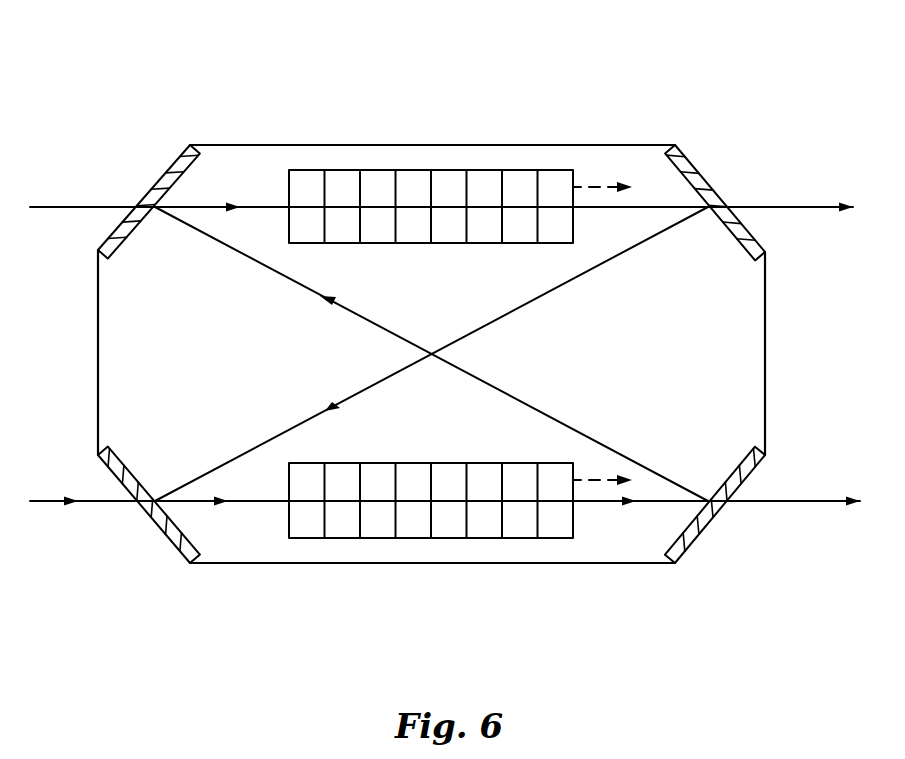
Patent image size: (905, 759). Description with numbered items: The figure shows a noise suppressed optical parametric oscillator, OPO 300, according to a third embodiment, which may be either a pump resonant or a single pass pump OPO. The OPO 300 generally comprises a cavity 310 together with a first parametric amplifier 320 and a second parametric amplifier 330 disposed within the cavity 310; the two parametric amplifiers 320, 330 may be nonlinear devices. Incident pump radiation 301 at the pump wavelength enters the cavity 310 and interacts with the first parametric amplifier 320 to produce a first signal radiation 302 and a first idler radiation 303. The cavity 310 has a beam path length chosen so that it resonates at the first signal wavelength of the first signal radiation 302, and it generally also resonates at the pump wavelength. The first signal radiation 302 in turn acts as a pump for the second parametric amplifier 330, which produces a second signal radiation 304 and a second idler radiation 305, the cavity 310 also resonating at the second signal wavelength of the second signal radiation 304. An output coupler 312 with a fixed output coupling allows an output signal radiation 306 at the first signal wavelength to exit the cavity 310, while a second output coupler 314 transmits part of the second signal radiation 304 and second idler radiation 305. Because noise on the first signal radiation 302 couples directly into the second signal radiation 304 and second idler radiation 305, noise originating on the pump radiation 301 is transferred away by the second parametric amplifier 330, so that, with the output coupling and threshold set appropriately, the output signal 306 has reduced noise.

The noise suppressed OPO 300 is at (270, 82).
The pump radiation 301 is at (60, 505).
The first signal radiation 302 is at (600, 530).
The first idler radiation 303 is at (598, 478).
The second signal radiation 304 is at (620, 230).
The second idler radiation 305 is at (593, 182).
The output signal radiation 306 is at (812, 507).
The cavity 310 is at (500, 145).
The output coupler 312 is at (693, 548).
The second output coupler 314 is at (708, 183).
The first parametric amplifier 320 is at (440, 540).
The second parametric amplifier 330 is at (423, 245).